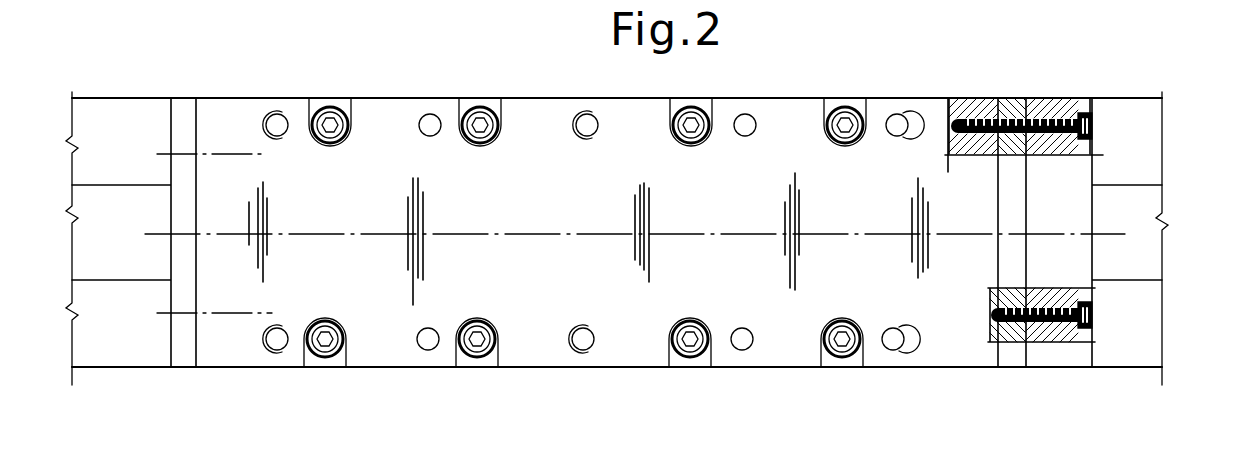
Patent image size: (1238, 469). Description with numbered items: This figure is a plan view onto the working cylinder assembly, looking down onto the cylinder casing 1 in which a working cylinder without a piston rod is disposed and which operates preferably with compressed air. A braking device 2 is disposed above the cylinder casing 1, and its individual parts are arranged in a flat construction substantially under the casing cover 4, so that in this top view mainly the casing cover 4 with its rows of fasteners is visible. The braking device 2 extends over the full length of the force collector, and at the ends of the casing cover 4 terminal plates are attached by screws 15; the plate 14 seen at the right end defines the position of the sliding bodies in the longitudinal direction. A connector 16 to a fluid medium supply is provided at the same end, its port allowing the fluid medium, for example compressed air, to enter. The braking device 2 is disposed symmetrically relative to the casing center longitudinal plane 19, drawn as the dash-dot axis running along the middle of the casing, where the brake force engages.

The cylinder casing 1 is at (1137, 100).
The braking device 2 is at (806, 90).
The casing cover 4 is at (933, 100).
The plate 14 is at (1008, 100).
The screws 15 is at (1086, 100).
The connector 16 is at (1050, 352).
The casing center longitudinal plane 19 is at (1110, 234).